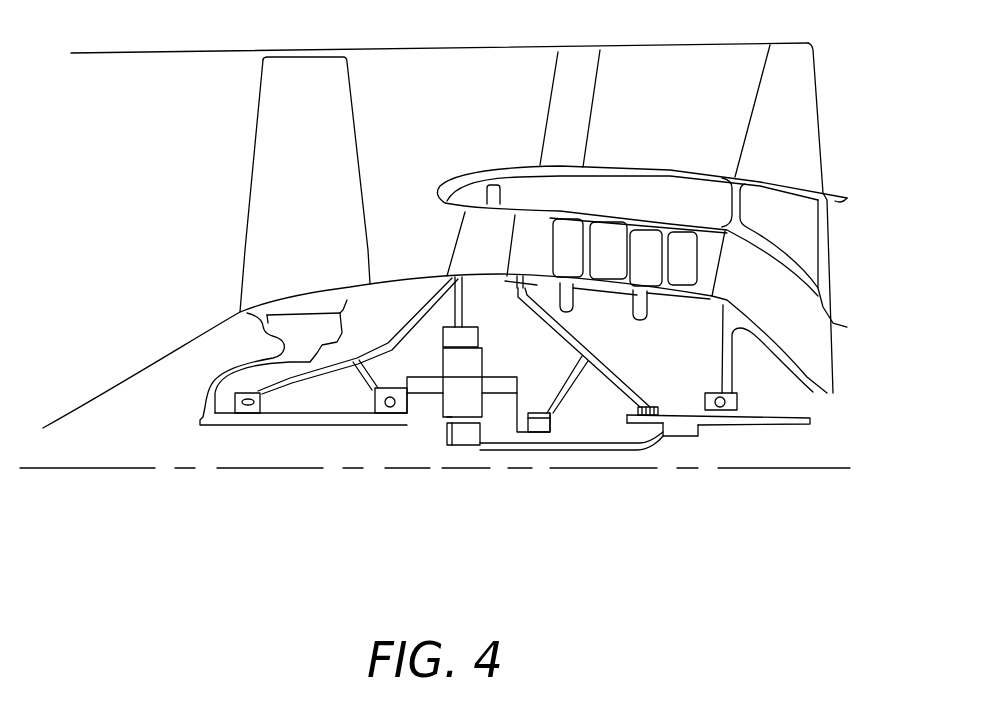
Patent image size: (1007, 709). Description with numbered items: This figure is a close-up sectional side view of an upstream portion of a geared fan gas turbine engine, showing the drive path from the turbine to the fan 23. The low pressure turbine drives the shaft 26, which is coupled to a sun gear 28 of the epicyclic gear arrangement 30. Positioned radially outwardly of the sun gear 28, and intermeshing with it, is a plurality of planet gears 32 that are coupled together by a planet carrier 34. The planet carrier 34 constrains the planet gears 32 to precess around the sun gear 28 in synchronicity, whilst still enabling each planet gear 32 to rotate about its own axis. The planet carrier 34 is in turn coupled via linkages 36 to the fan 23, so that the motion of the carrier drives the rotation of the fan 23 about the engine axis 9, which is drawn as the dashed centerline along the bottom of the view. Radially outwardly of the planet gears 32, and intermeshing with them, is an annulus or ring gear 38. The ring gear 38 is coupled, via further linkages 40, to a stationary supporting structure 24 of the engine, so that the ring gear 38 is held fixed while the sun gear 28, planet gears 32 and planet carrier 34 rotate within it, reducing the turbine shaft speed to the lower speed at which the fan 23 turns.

The engine axis 9 is at (133, 468).
The fan 23 is at (280, 184).
The stationary supporting structure 24 is at (465, 237).
The shaft 26 is at (590, 450).
The sun gear 28 is at (460, 440).
The epicyclic gear arrangement 30 is at (452, 407).
The planet gears 32 is at (450, 420).
The planet carrier 34 is at (508, 410).
The linkages 36 is at (407, 440).
The ring gear 38 is at (468, 337).
The linkages 40 is at (464, 305).